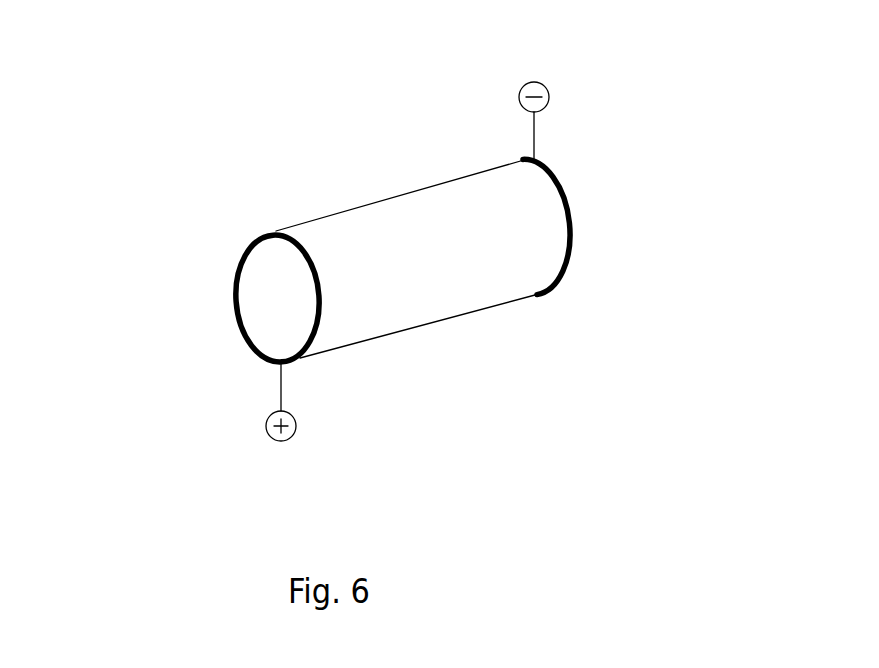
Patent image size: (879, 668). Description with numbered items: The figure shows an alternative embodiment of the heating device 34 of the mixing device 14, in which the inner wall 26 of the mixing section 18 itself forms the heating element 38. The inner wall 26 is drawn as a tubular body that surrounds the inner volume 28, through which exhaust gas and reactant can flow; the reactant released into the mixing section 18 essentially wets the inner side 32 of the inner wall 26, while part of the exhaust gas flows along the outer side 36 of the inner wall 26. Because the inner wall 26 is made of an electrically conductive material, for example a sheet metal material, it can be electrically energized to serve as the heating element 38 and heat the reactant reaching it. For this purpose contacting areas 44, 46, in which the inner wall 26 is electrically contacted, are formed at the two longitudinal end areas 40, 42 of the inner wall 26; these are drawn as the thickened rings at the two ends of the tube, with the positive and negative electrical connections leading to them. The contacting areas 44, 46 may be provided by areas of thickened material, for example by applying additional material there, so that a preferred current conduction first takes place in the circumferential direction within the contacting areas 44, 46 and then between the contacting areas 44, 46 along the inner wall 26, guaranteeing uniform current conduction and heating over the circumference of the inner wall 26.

The mixing device 14 is at (661, 16).
The mixing section 18 is at (493, 518).
The inner wall 26 is at (340, 208).
The inner volume 28 is at (308, 158).
The inner side 32 is at (254, 315).
The heating device 34 is at (380, 460).
The outer side 36 is at (498, 278).
The heating element 38 is at (433, 322).
The longitudinal end area 40 is at (60, 253).
The longitudinal end area 42 is at (706, 190).
The contacting area 44 is at (198, 172).
The contacting area 46 is at (565, 263).